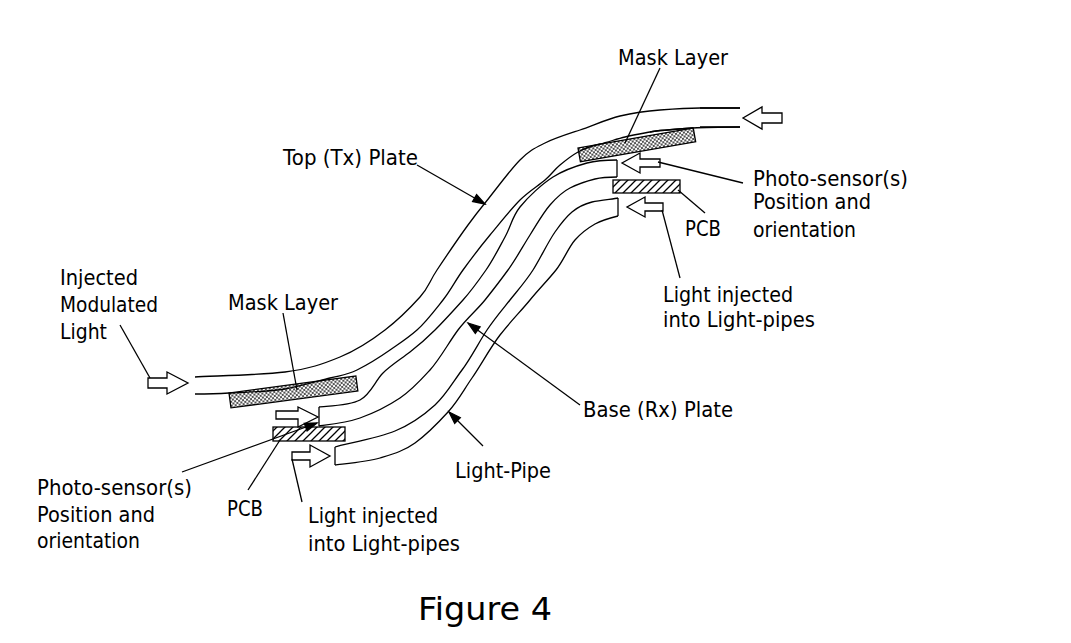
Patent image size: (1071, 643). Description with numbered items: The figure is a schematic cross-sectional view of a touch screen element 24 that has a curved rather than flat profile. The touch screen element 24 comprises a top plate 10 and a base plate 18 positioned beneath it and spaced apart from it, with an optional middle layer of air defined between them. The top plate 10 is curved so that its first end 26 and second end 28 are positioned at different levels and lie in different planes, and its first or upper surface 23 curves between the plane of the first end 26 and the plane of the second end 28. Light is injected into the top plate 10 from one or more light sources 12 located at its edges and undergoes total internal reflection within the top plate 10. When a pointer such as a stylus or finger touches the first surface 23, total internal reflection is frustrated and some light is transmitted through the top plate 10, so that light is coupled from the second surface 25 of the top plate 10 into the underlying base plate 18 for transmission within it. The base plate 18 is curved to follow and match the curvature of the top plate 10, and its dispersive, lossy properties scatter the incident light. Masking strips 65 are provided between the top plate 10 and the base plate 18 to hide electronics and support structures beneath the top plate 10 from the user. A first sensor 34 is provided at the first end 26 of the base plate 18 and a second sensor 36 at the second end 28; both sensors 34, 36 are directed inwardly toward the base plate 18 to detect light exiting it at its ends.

The top plate 10 is at (730, 116).
The light source 12 is at (166, 374).
The base plate 18 is at (557, 197).
The first surface 23 is at (518, 162).
The touch screen element 24 is at (182, 132).
The second surface 25 is at (727, 128).
The first end 26 is at (672, 132).
The second end 28 is at (274, 428).
The first sensor 34 is at (660, 156).
The second sensor 36 is at (276, 413).
The masking strips 65 is at (260, 393).